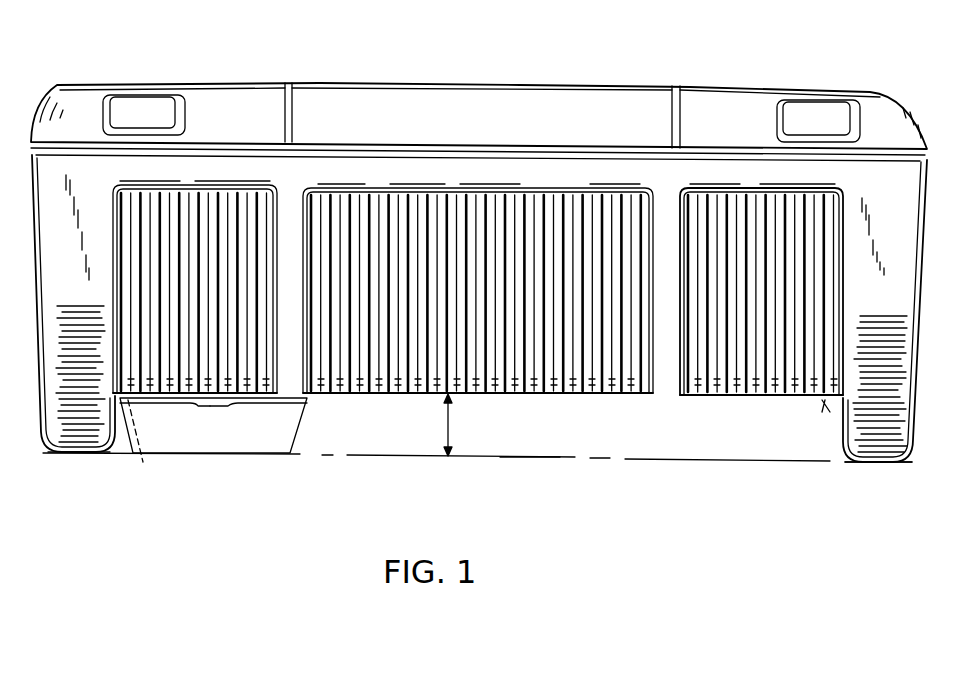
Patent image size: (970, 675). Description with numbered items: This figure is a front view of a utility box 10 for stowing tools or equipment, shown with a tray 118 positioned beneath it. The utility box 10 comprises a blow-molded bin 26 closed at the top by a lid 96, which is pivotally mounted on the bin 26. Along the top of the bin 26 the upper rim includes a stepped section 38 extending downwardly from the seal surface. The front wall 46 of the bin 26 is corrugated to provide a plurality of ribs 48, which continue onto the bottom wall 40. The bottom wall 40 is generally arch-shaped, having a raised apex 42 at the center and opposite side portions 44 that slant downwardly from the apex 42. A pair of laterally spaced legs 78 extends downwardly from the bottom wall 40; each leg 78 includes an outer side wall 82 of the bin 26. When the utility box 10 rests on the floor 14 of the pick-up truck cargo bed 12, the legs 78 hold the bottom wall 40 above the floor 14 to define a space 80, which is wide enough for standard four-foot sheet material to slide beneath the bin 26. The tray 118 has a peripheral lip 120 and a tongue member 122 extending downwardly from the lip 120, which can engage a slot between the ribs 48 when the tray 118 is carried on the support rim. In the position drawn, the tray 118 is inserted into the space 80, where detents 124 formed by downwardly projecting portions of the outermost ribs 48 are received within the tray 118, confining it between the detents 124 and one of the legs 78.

The utility box 10 is at (548, 62).
The lid 96 is at (704, 88).
The bin 26 is at (928, 178).
The stepped section 38 is at (905, 163).
The front wall 46 is at (836, 305).
The bottom wall 40 is at (663, 398).
The apex 42 is at (516, 396).
The ribs 48 is at (597, 395).
The side portions 44 is at (355, 396).
The side wall 82 is at (43, 376).
The legs 78 is at (80, 456).
The tray 118 is at (302, 441).
The lip 120 is at (155, 407).
The tongue member 122 is at (213, 411).
The detents 124 is at (825, 403).
The floor 14 is at (576, 459).
The cargo bed 12 is at (515, 463).
The space 80 is at (447, 428).